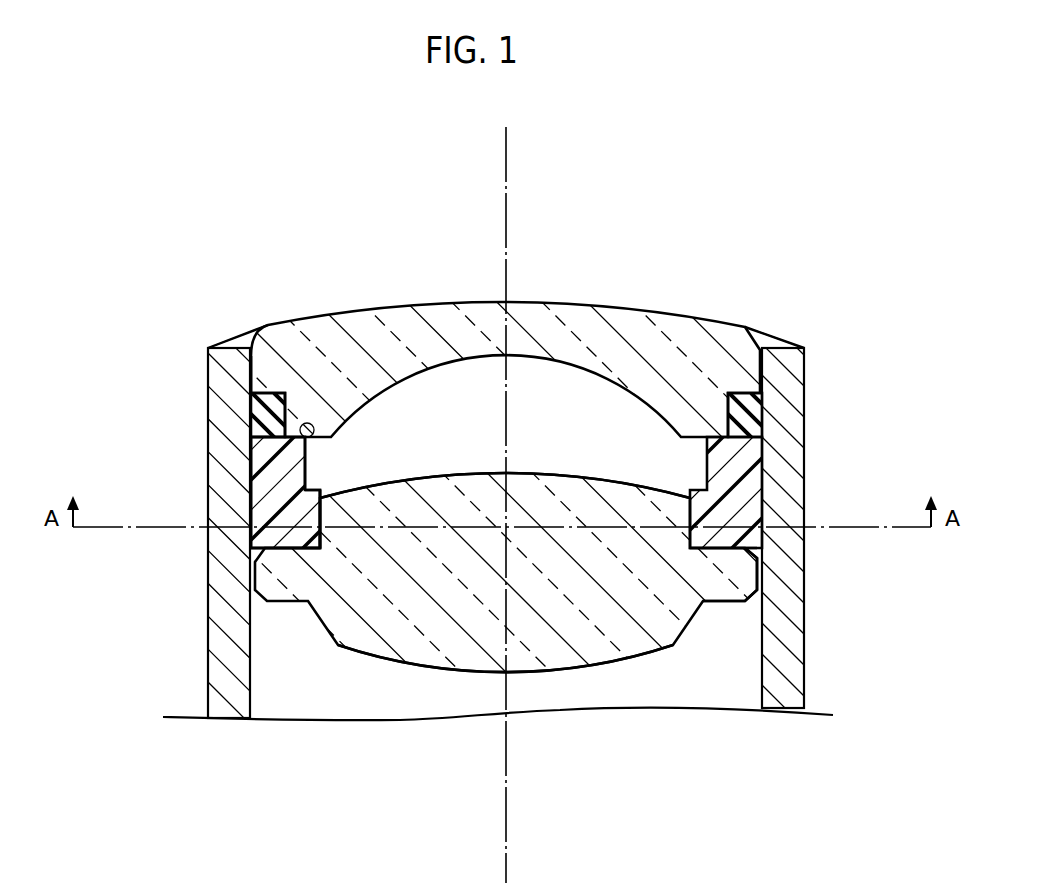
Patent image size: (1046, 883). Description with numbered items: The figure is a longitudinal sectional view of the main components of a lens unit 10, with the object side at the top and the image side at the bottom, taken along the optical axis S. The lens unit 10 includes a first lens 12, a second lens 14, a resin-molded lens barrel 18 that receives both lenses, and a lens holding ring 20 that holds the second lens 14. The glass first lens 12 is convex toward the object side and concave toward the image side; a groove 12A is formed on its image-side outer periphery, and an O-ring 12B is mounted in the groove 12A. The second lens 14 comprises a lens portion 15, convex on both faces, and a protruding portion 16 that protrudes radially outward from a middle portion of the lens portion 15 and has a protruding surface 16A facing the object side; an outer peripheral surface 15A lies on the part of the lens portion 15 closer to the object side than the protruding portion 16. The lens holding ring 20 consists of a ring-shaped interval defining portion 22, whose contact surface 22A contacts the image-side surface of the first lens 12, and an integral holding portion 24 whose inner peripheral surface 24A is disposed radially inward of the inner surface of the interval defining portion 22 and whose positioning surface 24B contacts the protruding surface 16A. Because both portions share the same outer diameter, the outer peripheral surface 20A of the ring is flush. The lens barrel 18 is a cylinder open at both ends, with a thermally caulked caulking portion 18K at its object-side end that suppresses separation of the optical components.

The lens unit 10 is at (852, 152).
The first lens 12 is at (678, 306).
The groove 12A is at (250, 375).
The O-ring 12B is at (257, 420).
The second lens 14 is at (610, 680).
The lens portion 15 is at (641, 661).
The outer peripheral surface 15A is at (700, 515).
The protruding portion 16 is at (748, 581).
The protruding surface 16A is at (740, 546).
The lens barrel 18 is at (805, 398).
The caulking portion 18K is at (748, 327).
The lens holding ring 20 is at (777, 466).
The outer peripheral surface 20A is at (255, 512).
The interval defining portion 22 is at (257, 490).
The contact surface 22A is at (300, 433).
The holding portion 24 is at (300, 525).
The inner peripheral surface 24A is at (325, 512).
The positioning surface 24B is at (297, 550).
The optical axis S is at (506, 153).